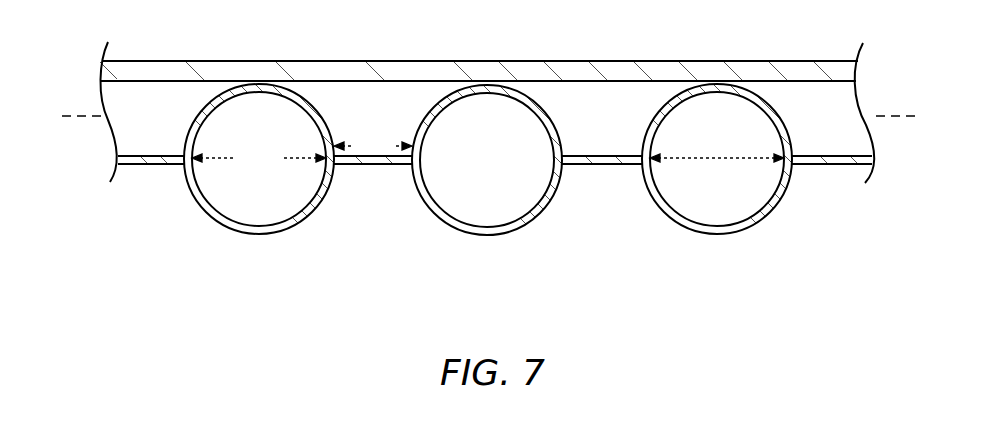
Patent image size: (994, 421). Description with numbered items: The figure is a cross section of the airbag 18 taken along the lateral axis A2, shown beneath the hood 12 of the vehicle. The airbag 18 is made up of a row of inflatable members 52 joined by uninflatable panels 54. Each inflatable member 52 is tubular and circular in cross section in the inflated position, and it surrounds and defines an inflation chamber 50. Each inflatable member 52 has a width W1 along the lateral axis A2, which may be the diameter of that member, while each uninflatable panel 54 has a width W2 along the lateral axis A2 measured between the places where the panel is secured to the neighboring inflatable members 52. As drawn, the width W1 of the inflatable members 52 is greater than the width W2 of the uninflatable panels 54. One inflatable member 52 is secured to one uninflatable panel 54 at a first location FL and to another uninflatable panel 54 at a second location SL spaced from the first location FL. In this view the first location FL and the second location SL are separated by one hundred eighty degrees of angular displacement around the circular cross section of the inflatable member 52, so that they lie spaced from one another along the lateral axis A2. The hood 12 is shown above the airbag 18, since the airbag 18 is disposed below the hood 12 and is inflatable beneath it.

The hood 12 is at (331, 60).
The uninflatable panel 54 is at (145, 155).
The inflation chamber 50 is at (230, 200).
The inflatable member 52 is at (245, 233).
The airbag 18 is at (698, 289).
The lateral axis A2 is at (488, 116).
The width of inflatable member W1 is at (259, 156).
The width of uninflatable panel W2 is at (373, 144).
The first location FL is at (181, 168).
The second location SL is at (340, 168).